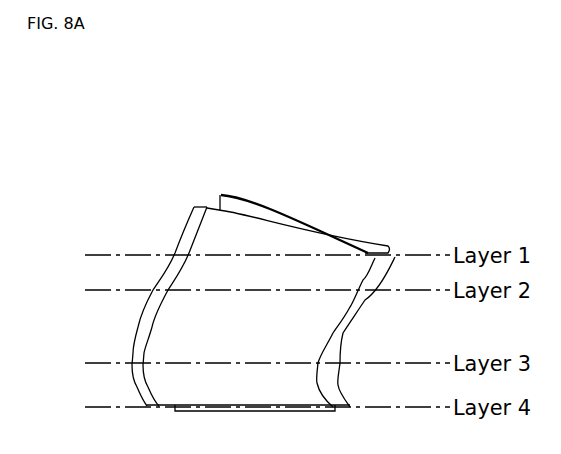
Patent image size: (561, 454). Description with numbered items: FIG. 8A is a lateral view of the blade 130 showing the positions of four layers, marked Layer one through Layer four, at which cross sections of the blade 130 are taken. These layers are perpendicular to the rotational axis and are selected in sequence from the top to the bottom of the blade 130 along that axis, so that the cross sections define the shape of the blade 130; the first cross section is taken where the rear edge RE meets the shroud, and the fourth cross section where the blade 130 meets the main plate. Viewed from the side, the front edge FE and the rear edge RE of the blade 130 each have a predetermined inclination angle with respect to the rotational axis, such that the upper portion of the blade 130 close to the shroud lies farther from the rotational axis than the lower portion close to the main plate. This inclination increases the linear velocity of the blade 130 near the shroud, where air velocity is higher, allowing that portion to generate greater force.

The blade 130 is at (274, 242).
The front edge FE is at (175, 253).
The rear edge RE is at (365, 308).